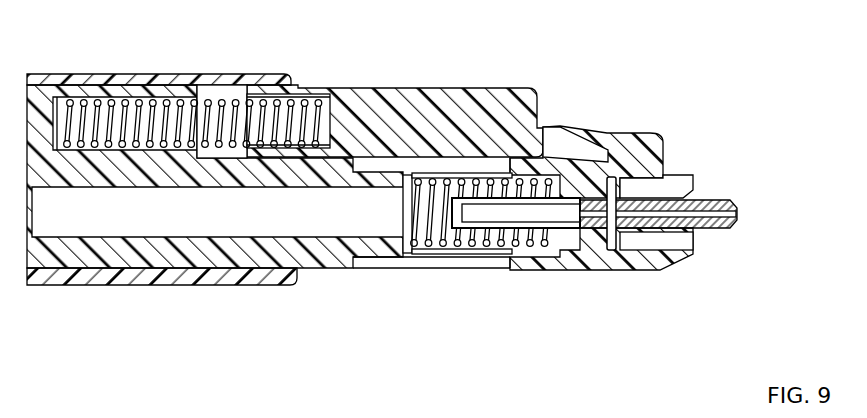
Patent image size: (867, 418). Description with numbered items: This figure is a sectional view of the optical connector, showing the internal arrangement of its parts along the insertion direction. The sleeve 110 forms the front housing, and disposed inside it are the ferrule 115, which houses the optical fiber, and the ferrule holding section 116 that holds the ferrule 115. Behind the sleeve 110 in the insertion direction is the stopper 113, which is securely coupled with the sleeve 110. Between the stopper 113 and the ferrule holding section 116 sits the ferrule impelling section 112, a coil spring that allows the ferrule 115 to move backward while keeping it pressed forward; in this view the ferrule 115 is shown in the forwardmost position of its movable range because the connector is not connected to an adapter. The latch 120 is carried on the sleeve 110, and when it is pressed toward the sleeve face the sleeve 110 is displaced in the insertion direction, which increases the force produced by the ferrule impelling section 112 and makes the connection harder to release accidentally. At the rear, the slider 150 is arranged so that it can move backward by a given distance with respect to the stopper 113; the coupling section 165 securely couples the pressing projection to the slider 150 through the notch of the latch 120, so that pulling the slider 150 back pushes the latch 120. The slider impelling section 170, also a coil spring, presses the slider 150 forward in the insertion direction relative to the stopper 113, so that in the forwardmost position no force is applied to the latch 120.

The sleeve 110 is at (585, 262).
The ferrule impelling section 112 is at (480, 258).
The stopper 113 is at (343, 260).
The ferrule 115 is at (706, 200).
The ferrule holding section 116 is at (610, 258).
The latch 120 is at (558, 126).
The slider 150 is at (215, 80).
The coupling section 165 is at (460, 88).
The slider impelling section 170 is at (300, 82).